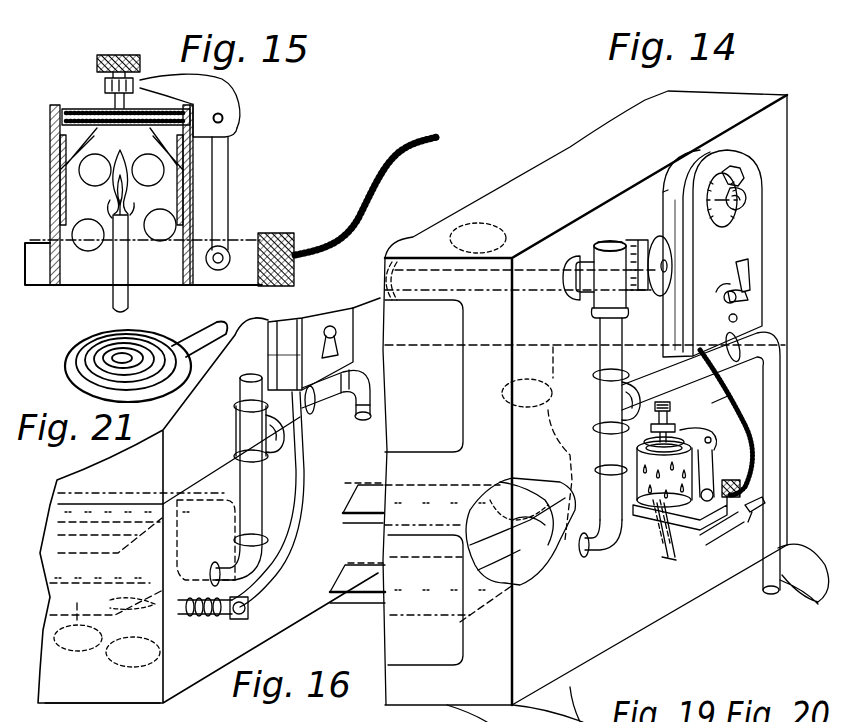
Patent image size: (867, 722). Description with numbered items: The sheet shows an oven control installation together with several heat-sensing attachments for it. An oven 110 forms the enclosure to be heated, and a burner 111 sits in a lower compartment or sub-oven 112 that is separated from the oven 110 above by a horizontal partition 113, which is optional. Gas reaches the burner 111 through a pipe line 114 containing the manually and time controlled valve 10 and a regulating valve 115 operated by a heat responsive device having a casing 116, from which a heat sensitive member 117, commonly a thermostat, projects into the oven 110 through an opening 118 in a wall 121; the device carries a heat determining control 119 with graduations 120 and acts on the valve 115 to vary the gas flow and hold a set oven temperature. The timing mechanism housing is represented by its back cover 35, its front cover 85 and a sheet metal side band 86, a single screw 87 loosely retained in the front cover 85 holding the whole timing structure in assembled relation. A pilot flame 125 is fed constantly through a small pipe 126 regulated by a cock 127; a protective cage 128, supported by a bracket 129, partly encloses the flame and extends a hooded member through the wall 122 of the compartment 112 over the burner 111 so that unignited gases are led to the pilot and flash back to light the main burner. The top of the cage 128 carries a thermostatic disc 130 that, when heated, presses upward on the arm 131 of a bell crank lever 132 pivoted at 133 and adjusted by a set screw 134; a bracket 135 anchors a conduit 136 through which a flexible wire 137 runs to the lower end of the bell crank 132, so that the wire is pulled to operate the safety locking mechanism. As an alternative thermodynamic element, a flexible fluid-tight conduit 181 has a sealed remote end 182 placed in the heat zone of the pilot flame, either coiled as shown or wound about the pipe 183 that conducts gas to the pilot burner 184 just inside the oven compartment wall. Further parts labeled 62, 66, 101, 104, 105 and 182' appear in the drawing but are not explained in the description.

In FIG. 16, the valve 10 is at (345, 422).
In FIG. 14, the valve 10 is at (722, 398).
In FIG. 16, the back cover 35 is at (273, 350).
In FIG. 14, the back cover 35 is at (673, 193).
In FIG. 16, the switch 62 is at (340, 300).
In FIG. 14, the switch 62 is at (748, 268).
In FIG. 14, the switch base 66 is at (727, 281).
In FIG. 14, the front cover 85 is at (712, 253).
In FIG. 16, the sheet metal band 86 is at (282, 325).
In FIG. 14, the sheet metal band 86 is at (662, 191).
In FIG. 14, the screw 87 is at (738, 318).
In FIG. 14, the dial 101 is at (713, 173).
In FIG. 14, the indicator 104 is at (709, 208).
In FIG. 14, the knob 105 is at (745, 176).
In FIG. 16, the oven 110 is at (162, 448).
In FIG. 14, the oven 110 is at (578, 133).
In FIG. 16, the burner 111 is at (367, 566).
In FIG. 14, the burner 111 is at (449, 553).
In FIG. 16, the sub-oven 112 is at (127, 680).
In FIG. 14, the sub-oven 112 is at (623, 617).
In FIG. 14, the horizontal partition 113 is at (537, 443).
In FIG. 16, the pipe line 114 is at (336, 417).
In FIG. 14, the pipe line 114 is at (757, 565).
In FIG. 16, the regulating valve 115 is at (240, 445).
In FIG. 14, the regulating valve 115 is at (610, 402).
In FIG. 14, the casing 116 is at (598, 296).
In FIG. 14, the heat sensitive member 117 is at (462, 278).
In FIG. 14, the opening 118 is at (596, 250).
In FIG. 14, the heat determining control 119 is at (663, 298).
In FIG. 14, the graduations 120 is at (604, 246).
In FIG. 14, the wall 121 is at (528, 478).
In FIG. 14, the wall 122 is at (530, 577).
In FIG. 15, the pilot flame 125 is at (133, 165).
In FIG. 14, the pilot flame 125 is at (645, 520).
In FIG. 15, the small pipe 126 is at (113, 292).
In FIG. 14, the small pipe 126 is at (669, 558).
In FIG. 14, the cock 127 is at (758, 507).
In FIG. 15, the protective cage 128 is at (185, 270).
In FIG. 14, the protective cage 128 is at (680, 489).
In FIG. 15, the bracket 129 is at (236, 275).
In FIG. 14, the bracket 129 is at (637, 545).
In FIG. 15, the thermostatic disc 130 is at (80, 113).
In FIG. 14, the thermostatic disc 130 is at (692, 432).
In FIG. 15, the arm 131 is at (210, 88).
In FIG. 14, the arm 131 is at (672, 422).
In FIG. 15, the bell crank lever 132 is at (229, 160).
In FIG. 14, the bell crank lever 132 is at (706, 462).
In FIG. 15, the pivot 133 is at (223, 118).
In FIG. 14, the pivot 133 is at (711, 447).
In FIG. 15, the set screw 134 is at (97, 62).
In FIG. 14, the set screw 134 is at (662, 410).
In FIG. 15, the bracket 135 is at (237, 134).
In FIG. 15, the conduit 136 is at (355, 207).
In FIG. 14, the conduit 136 is at (748, 418).
In FIG. 15, the flexible wire 137 is at (253, 258).
In FIG. 14, the flexible wire 137 is at (727, 515).
In FIG. 21, the flexible conduit 181 is at (203, 342).
In FIG. 16, the flexible conduit 181 is at (298, 486).
In FIG. 21, the remote end 182 is at (112, 366).
In FIG. 16, the coupling 182' is at (198, 625).
In FIG. 16, the pipe 183 is at (228, 616).
In FIG. 16, the pilot burner 184 is at (133, 652).